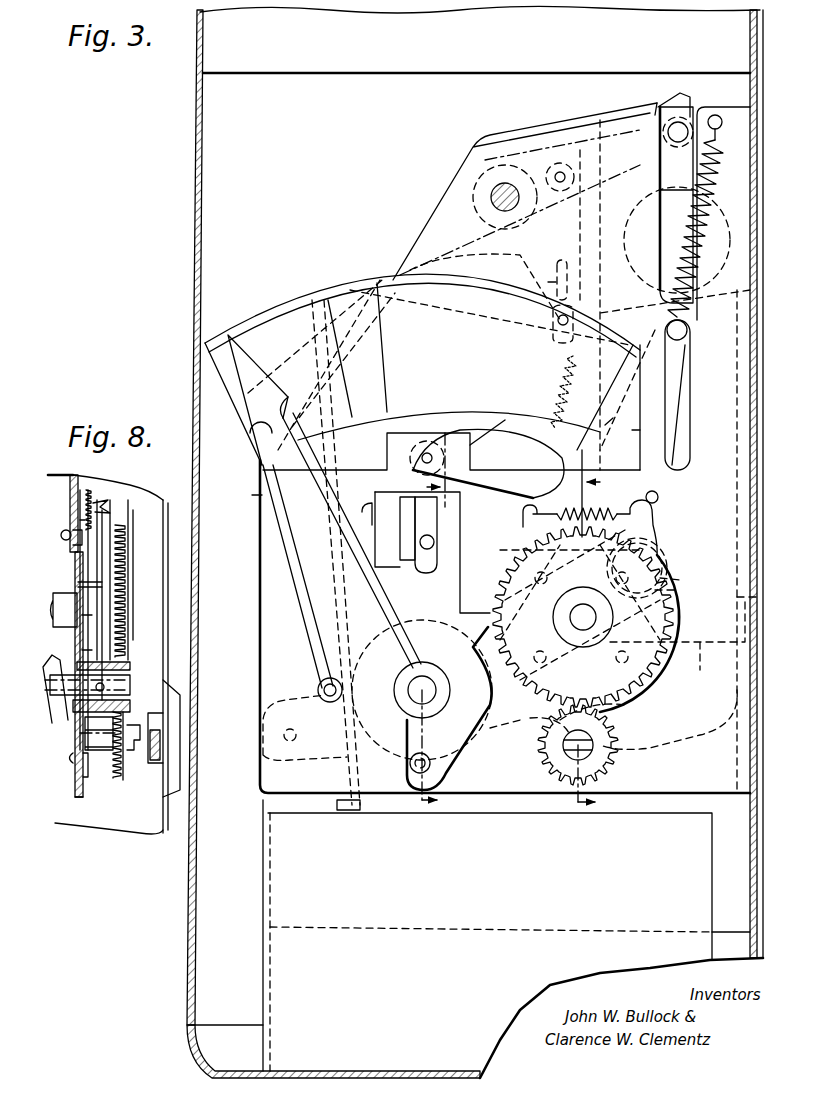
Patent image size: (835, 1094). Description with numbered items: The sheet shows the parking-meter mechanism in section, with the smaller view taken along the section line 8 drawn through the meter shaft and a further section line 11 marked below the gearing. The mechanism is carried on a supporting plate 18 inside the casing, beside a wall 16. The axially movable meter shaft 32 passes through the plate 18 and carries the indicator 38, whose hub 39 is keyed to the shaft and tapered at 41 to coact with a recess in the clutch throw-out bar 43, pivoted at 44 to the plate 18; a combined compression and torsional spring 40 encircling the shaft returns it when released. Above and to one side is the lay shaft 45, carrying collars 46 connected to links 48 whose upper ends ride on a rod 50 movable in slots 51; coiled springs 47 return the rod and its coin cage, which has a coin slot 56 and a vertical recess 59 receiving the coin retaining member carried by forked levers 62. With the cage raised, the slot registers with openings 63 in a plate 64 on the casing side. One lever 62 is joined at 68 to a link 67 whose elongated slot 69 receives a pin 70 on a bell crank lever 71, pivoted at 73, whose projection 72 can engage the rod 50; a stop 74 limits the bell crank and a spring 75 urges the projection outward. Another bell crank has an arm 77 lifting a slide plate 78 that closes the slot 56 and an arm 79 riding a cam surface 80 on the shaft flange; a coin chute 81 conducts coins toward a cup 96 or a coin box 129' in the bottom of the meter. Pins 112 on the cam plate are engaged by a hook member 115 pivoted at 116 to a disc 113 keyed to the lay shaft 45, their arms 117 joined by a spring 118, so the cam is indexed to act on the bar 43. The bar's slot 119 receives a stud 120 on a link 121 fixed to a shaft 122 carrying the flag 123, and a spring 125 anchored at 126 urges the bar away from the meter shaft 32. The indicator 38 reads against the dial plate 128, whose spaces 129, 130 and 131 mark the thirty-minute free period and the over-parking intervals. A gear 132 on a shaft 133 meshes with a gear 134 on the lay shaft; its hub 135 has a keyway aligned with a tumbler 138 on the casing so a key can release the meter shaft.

In FIG. 3, the section line 8 is at (432, 623).
In FIG. 3, the section line arrow 11 is at (598, 644).
In FIG. 3, the mounting plate 16 is at (258, 598).
In FIG. 8, the supporting plate 18 is at (76, 795).
In FIG. 3, the meter shaft 32 is at (426, 680).
In FIG. 8, the meter shaft 32 is at (128, 672).
In FIG. 3, the indicator 38 is at (250, 387).
In FIG. 8, the indicator 38 is at (127, 502).
In FIG. 3, the hub 39 is at (408, 685).
In FIG. 8, the hub 39 is at (127, 653).
In FIG. 8, the combined compression and torsional spring 40 is at (68, 758).
In FIG. 8, the tapered inner end 41 is at (73, 720).
In FIG. 3, the clutch throw-out bar 43 is at (403, 592).
In FIG. 8, the clutch throw-out bar 43 is at (83, 635).
In FIG. 3, the pivot 44 is at (420, 770).
In FIG. 8, the pivot 44 is at (88, 775).
In FIG. 3, the lay shaft 45 is at (583, 617).
In FIG. 8, the lay shaft 45 is at (62, 595).
In FIG. 3, the collars or arms 46 is at (588, 575).
In FIG. 3, the coiled springs 47 is at (705, 190).
In FIG. 3, the links 48 is at (680, 408).
In FIG. 3, the shaft or rod 50 is at (690, 330).
In FIG. 3, the slots or openings 51 is at (690, 433).
In FIG. 3, the coin slot 56 is at (745, 346).
In FIG. 3, the vertically disposed slot or recess 59 is at (712, 212).
In FIG. 3, the forked levers 62 is at (560, 145).
In FIG. 3, the openings 63 is at (275, 752).
In FIG. 3, the plate 64 is at (760, 287).
In FIG. 3, the link 67 is at (548, 265).
In FIG. 3, the connection 68 is at (570, 175).
In FIG. 3, the elongated slot 69 is at (548, 282).
In FIG. 3, the pin or stud 70 is at (552, 320).
In FIG. 3, the bell crank lever 71 is at (615, 413).
In FIG. 3, the projection 72 is at (638, 430).
In FIG. 3, the pivot 73 is at (632, 372).
In FIG. 3, the stop 74 is at (660, 498).
In FIG. 3, the spring 75 is at (563, 360).
In FIG. 3, the arm 77 is at (705, 643).
In FIG. 3, the slide plate 78 is at (757, 597).
In FIG. 3, the arm 79 is at (490, 728).
In FIG. 3, the cam surface 80 is at (460, 608).
In FIG. 3, the coin chute 81 is at (262, 494).
In FIG. 3, the cup 96 is at (700, 735).
In FIG. 3, the pins or lugs 112 is at (620, 657).
In FIG. 3, the member or disc 113 is at (675, 590).
In FIG. 8, the member or disc 113 is at (107, 515).
In FIG. 3, the hook member 115 is at (680, 580).
In FIG. 8, the hook member 115 is at (120, 527).
In FIG. 3, the pivot 116 is at (638, 703).
In FIG. 3, the arms 117 is at (450, 525).
In FIG. 3, the spring 118 is at (582, 493).
In FIG. 8, the spring 118 is at (97, 503).
In FIG. 3, the elongated slot 119 is at (455, 510).
In FIG. 3, the stud 120 is at (450, 540).
In FIG. 3, the link 121 is at (488, 463).
In FIG. 3, the shaft 122 is at (432, 450).
In FIG. 3, the signal or flag 123 is at (497, 423).
In FIG. 3, the spring 125 is at (282, 550).
In FIG. 3, the fastening point 126 is at (270, 515).
In FIG. 3, the dial plate 128 is at (253, 318).
In FIG. 3, the dial space 129 is at (422, 314).
In FIG. 3, the coin box 129' is at (486, 942).
In FIG. 3, the dial space 130 is at (378, 285).
In FIG. 3, the dial space 131 is at (400, 270).
In FIG. 3, the gear 132 is at (625, 770).
In FIG. 3, the shaft 133 is at (545, 770).
In FIG. 3, the gear 134 is at (660, 668).
In FIG. 8, the gear 134 is at (127, 573).
In FIG. 3, the hub 135 is at (545, 750).
In FIG. 8, the hub 135 is at (130, 790).
In FIG. 8, the tumbler 138 is at (165, 835).